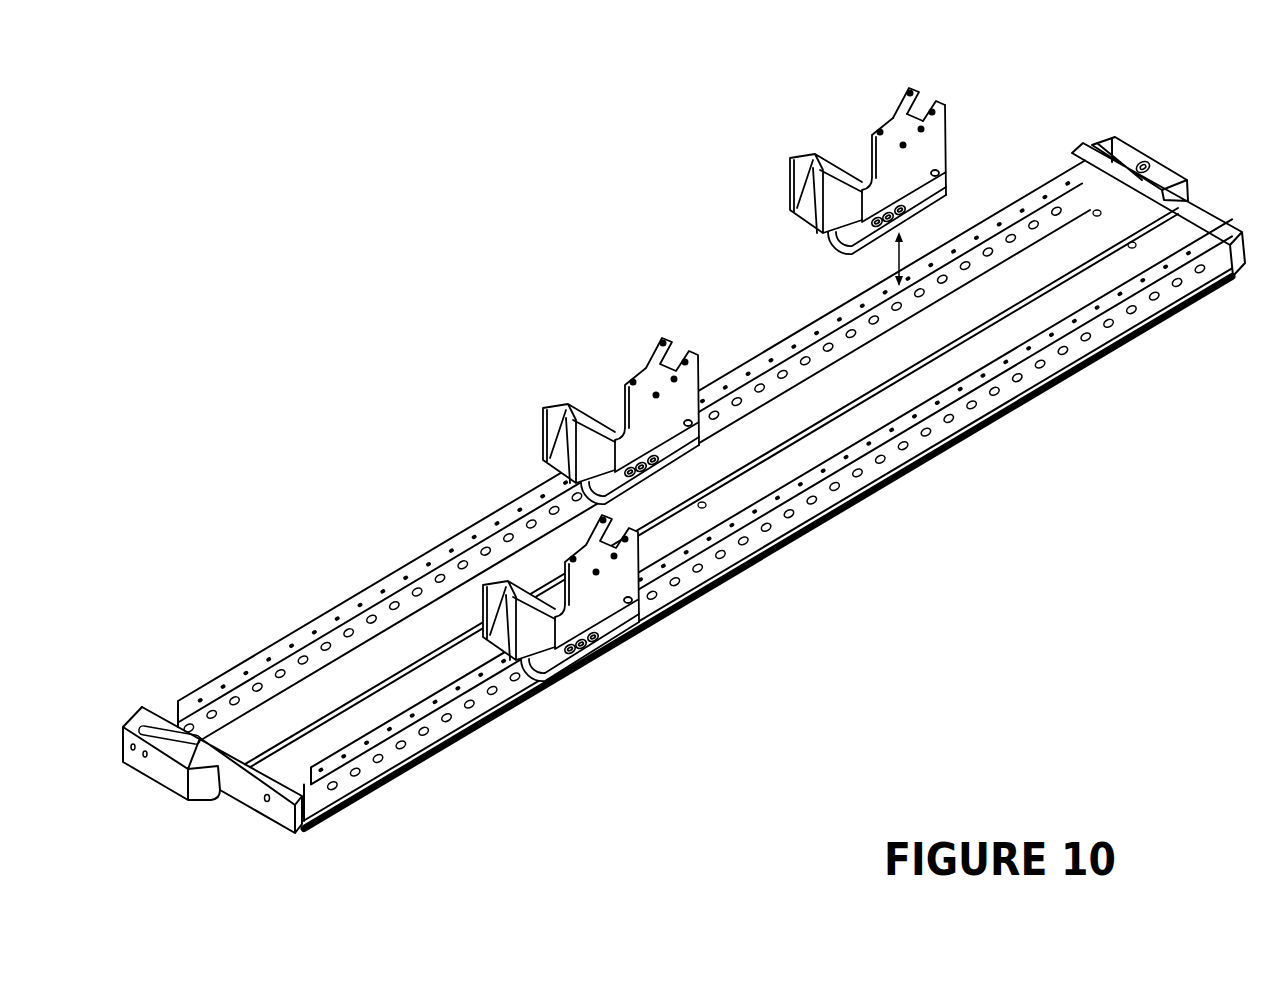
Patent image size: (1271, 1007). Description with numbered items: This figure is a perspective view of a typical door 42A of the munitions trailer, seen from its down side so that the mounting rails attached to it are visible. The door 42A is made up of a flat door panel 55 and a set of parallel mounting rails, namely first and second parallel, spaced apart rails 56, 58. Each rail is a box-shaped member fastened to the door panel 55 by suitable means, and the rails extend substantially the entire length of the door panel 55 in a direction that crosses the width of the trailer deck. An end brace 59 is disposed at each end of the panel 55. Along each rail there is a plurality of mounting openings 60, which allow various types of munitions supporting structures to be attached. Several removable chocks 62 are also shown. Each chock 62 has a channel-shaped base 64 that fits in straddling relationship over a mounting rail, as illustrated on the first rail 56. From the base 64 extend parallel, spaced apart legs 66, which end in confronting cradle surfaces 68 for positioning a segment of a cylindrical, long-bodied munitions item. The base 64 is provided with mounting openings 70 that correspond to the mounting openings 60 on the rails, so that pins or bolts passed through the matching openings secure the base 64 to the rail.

The first door 42A is at (680, 496).
The door panel 55 is at (490, 728).
The first rail 56 is at (368, 587).
The second rail 58 is at (943, 437).
The end brace 59 is at (156, 712).
The mounting openings 60 is at (1088, 343).
The removable chock 62 is at (757, 340).
The channel-shaped base 64 is at (853, 252).
The legs 66 is at (790, 187).
The cradle surfaces 68 is at (882, 104).
The mounting openings 70 is at (952, 196).